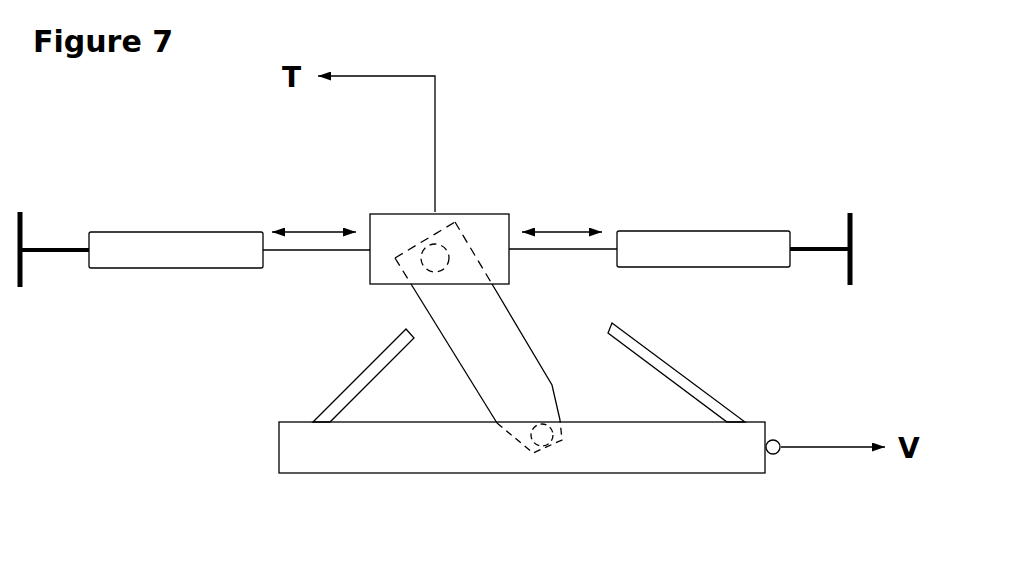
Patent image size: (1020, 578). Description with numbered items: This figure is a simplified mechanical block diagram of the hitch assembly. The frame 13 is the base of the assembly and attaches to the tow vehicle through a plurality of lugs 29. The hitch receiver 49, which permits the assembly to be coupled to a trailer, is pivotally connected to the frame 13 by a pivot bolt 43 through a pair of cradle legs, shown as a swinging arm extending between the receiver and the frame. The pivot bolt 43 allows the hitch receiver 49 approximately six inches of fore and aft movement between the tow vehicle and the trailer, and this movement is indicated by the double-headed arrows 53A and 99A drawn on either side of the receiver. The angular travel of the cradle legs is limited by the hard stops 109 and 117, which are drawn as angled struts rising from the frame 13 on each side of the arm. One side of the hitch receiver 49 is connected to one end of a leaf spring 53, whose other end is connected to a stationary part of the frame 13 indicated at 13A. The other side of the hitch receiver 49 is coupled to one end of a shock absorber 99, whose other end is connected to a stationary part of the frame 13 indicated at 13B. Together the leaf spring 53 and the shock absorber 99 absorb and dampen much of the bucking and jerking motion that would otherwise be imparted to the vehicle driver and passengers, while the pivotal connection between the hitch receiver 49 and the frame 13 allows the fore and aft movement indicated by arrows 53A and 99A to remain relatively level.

The frame 13 is at (680, 474).
The stationary part of frame 13A is at (25, 272).
The stationary part of frame 13B is at (855, 243).
The lugs 29 is at (782, 440).
The pivot bolt 43 is at (546, 441).
The hitch receiver 49 is at (490, 211).
The leaf spring 53 is at (173, 230).
The arrow 53A is at (310, 224).
The shock absorber 99 is at (697, 230).
The arrow 99A is at (567, 227).
The hard stop 109 is at (345, 390).
The hard stop 117 is at (675, 365).